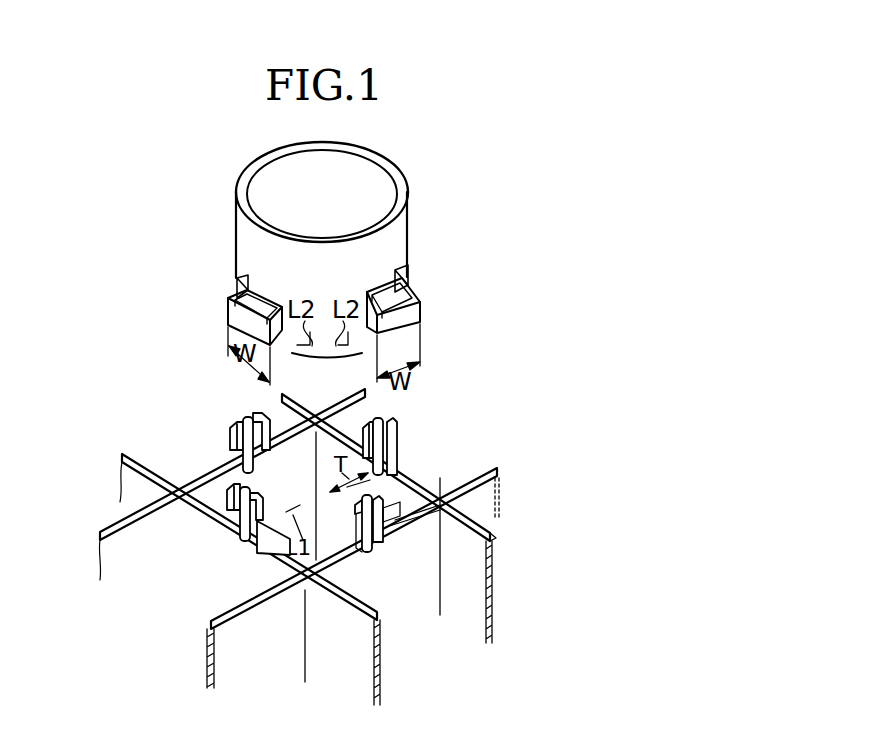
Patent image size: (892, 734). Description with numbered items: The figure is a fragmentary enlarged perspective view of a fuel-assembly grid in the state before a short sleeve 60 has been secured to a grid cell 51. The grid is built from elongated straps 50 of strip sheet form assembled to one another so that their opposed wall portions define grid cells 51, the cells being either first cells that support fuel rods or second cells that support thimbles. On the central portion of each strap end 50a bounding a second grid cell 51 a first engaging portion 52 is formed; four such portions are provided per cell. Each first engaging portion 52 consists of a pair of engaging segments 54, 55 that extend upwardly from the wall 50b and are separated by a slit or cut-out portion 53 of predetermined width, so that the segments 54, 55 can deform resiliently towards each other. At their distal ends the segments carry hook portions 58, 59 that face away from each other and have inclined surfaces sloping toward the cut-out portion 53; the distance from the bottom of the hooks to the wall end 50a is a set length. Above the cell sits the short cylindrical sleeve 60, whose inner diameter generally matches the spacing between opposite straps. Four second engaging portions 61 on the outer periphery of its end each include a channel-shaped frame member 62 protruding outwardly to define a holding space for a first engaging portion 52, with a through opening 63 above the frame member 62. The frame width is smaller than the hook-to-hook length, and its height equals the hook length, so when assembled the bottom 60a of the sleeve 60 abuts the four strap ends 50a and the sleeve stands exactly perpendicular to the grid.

The short cylindrical sleeve 60 is at (420, 205).
The bottom of the sleeve 60a is at (322, 359).
The second engaging portion 61 is at (228, 300).
The frame member 62 is at (228, 315).
The through opening 63 is at (240, 288).
The strap 50 is at (178, 602).
The end of the strap portion 50a is at (482, 486).
The wall 50b is at (230, 583).
The grid cell 51 is at (411, 605).
The first engaging portion 52 is at (384, 468).
The cut-out portion 53 is at (470, 535).
The engaging segment 54 is at (400, 540).
The engaging segment 55 is at (483, 563).
The hook portion 58 is at (357, 505).
The hook portion 59 is at (387, 497).